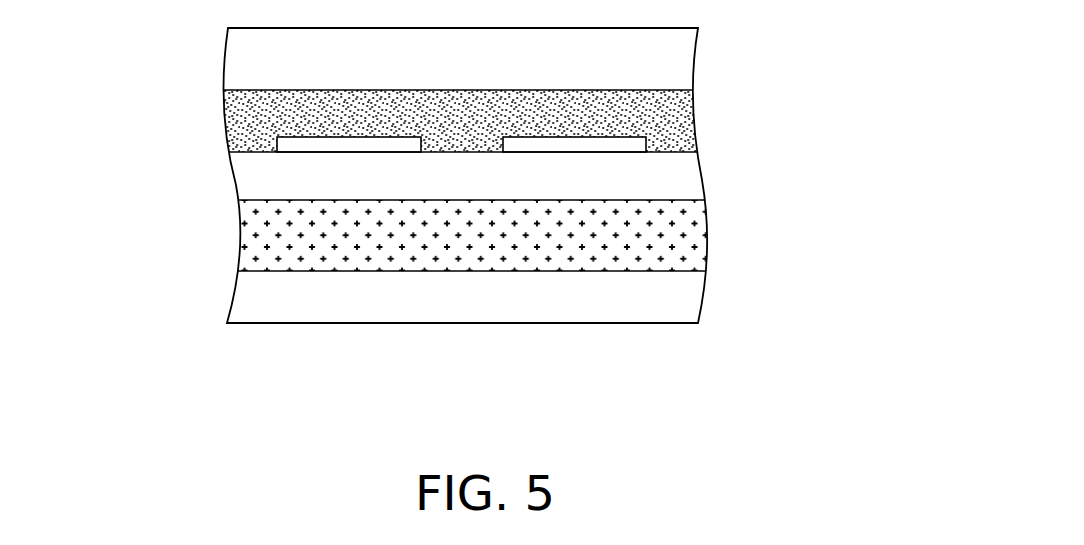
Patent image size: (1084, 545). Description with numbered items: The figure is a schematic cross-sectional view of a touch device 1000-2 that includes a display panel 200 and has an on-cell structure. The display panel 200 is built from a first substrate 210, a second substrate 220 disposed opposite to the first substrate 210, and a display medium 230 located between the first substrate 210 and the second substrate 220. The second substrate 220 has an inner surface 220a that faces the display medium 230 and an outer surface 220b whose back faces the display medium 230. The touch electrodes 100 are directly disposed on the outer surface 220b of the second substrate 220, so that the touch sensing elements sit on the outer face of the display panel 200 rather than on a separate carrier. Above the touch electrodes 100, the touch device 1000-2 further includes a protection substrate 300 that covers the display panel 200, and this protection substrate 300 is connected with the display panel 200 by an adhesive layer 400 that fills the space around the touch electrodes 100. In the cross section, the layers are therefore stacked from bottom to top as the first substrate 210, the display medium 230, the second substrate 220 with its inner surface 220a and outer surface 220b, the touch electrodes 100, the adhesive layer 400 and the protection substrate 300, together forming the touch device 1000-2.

The touch device 1000-2 is at (491, 226).
The protection substrate 300 is at (671, 59).
The adhesive layer 400 is at (672, 115).
The touch electrodes 100 is at (630, 146).
The display panel 200 is at (490, 221).
The second substrate 220 is at (456, 178).
The outer surface 220b is at (257, 150).
The inner surface 220a is at (267, 202).
The display medium 230 is at (683, 237).
The first substrate 210 is at (491, 301).